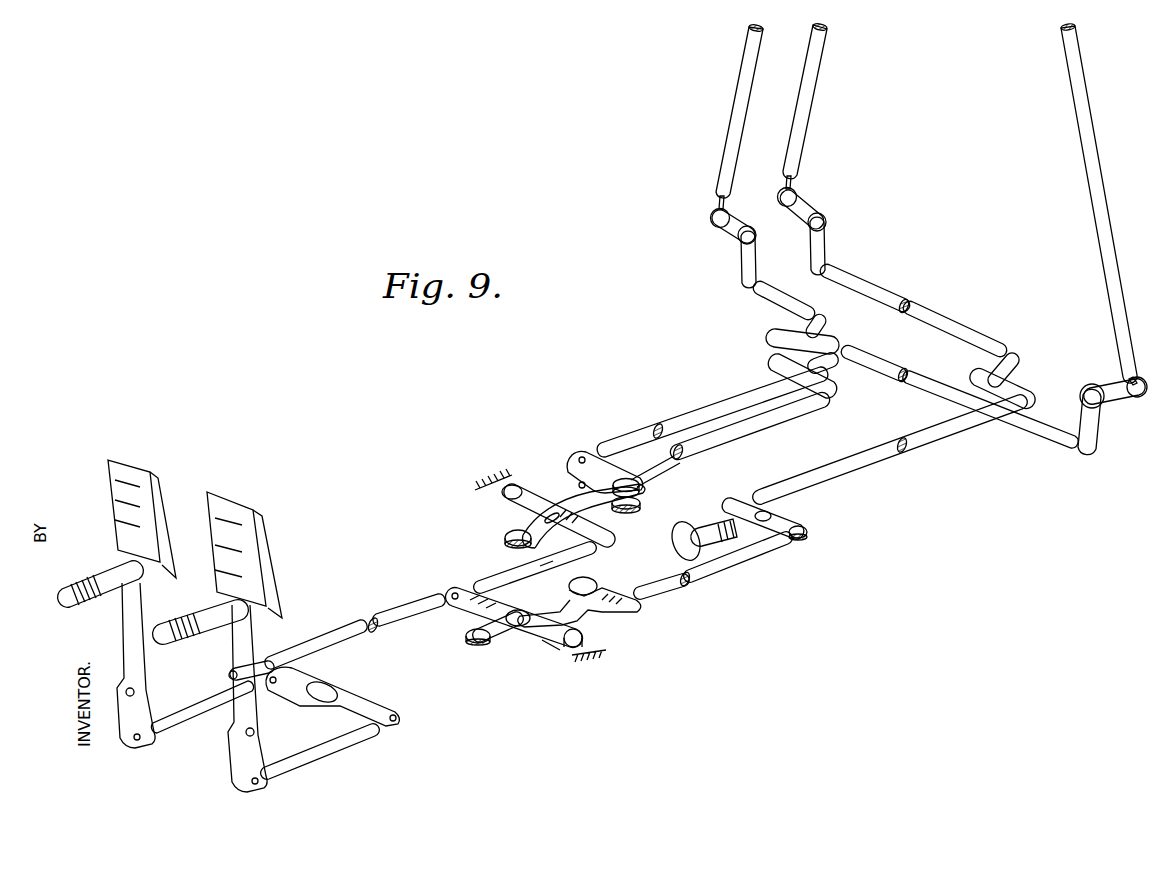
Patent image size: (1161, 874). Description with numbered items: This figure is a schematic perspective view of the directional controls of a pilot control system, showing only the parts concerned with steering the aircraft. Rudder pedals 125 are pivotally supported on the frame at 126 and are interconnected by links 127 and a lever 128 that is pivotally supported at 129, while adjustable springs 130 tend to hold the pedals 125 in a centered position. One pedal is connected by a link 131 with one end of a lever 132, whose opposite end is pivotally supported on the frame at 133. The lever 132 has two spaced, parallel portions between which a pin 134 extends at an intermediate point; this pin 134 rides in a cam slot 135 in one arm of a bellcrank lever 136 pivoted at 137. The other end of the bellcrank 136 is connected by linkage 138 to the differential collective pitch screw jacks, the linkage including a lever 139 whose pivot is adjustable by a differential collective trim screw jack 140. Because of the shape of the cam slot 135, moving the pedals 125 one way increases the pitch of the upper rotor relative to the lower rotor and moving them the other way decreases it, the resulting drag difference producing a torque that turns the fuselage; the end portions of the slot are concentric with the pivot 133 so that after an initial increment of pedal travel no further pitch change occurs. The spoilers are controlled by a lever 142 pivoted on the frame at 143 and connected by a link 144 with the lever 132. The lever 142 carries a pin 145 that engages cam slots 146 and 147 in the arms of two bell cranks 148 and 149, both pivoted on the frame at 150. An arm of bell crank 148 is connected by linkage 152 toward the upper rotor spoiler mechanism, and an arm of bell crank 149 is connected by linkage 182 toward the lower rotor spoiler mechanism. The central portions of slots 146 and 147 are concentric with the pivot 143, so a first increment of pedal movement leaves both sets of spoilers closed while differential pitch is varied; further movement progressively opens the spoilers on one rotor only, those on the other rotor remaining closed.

The rudder pedals 125 is at (207, 494).
The pedal pivot 126 is at (134, 691).
The links 127 is at (194, 706).
The lever 128 is at (374, 700).
The lever pivot 129 is at (331, 690).
The adjustable springs 130 is at (70, 580).
The link 131 is at (374, 622).
The lever 132 is at (452, 592).
The lever pivot 133 is at (583, 638).
The pin 134 is at (528, 645).
The cam slot 135 is at (470, 634).
The bellcrank lever 136 is at (474, 645).
The bellcrank pivot 137 is at (586, 582).
The linkage 138 is at (816, 90).
The lever 139 is at (788, 517).
The differential collective trim screw jack 140 is at (735, 543).
The lever 142 is at (533, 488).
The lever pivot 143 is at (500, 481).
The link 144 is at (500, 576).
The pin 145 is at (518, 508).
The cam slot 146 is at (518, 523).
The cam slot 147 is at (614, 513).
The bell crank 148 is at (505, 537).
The bell crank 149 is at (522, 551).
The bell crank pivot 150 is at (641, 486).
The linkage 152 is at (1110, 244).
The linkage 182 is at (742, 77).